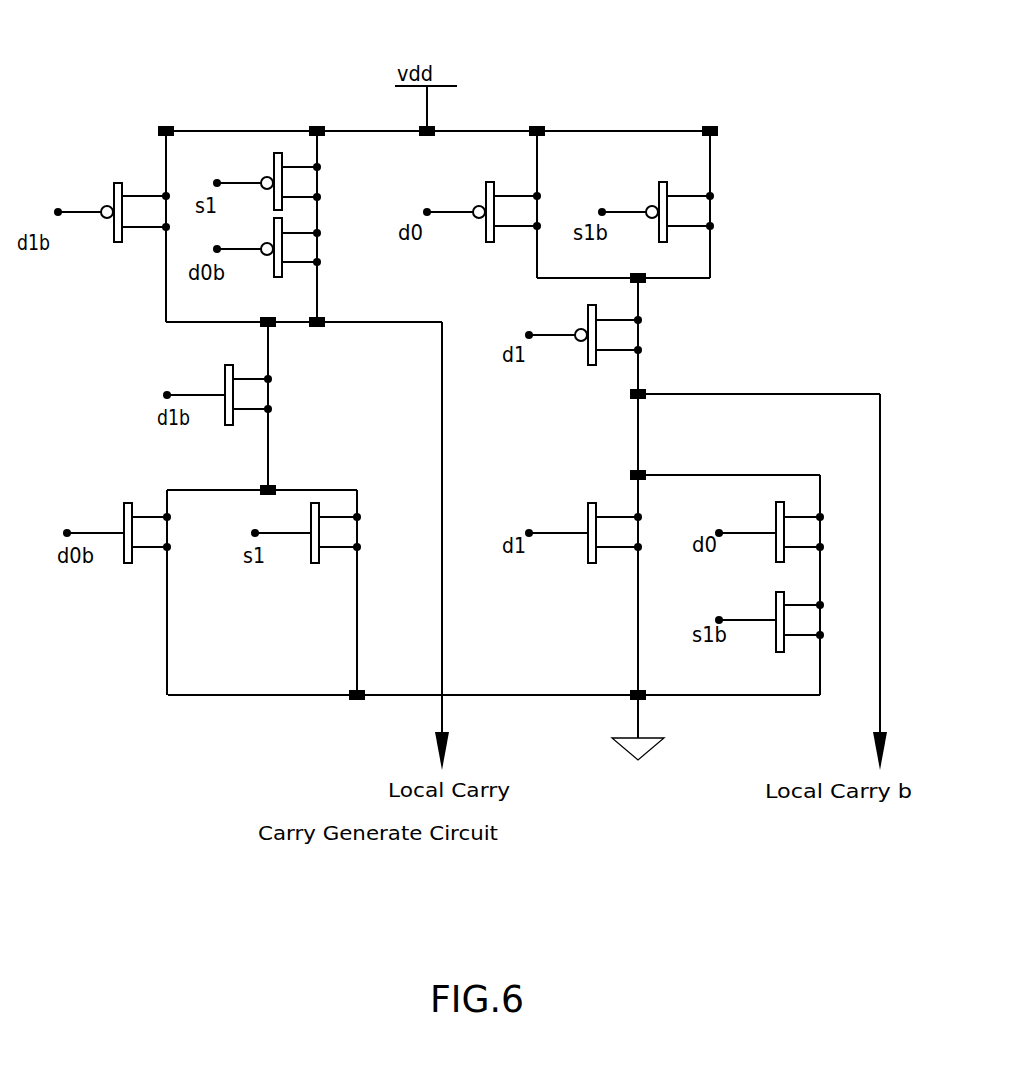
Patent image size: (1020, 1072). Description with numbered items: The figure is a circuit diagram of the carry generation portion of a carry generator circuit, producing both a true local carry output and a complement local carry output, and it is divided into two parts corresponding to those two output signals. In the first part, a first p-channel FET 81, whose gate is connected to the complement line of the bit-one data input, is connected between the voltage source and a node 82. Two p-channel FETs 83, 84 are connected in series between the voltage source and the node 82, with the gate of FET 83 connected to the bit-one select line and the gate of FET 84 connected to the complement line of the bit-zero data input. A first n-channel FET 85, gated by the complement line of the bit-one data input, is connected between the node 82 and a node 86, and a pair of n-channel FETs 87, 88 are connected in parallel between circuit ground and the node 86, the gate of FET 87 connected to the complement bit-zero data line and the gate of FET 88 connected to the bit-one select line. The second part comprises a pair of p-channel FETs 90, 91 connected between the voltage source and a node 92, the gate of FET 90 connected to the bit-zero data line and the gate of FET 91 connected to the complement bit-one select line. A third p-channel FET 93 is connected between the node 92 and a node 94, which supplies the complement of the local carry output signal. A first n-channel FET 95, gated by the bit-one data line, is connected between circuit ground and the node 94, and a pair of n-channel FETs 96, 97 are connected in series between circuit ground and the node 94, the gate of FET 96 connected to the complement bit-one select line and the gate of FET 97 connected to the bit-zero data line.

The first p-channel FET 81 is at (116, 184).
The node 82 is at (292, 324).
The p-channel FET 83 is at (274, 165).
The p-channel FET 84 is at (275, 275).
The first n-channel FET 85 is at (226, 368).
The node 86 is at (273, 487).
The n-channel FET 87 is at (125, 506).
The n-channel FET 88 is at (311, 519).
The p-channel FET 90 is at (486, 190).
The p-channel FET 91 is at (659, 186).
The node 92 is at (677, 280).
The third p-channel FET 93 is at (588, 318).
The node 94 is at (640, 385).
The first n-channel FET 95 is at (589, 507).
The n-channel FET 96 is at (777, 510).
The n-channel FET 97 is at (777, 648).